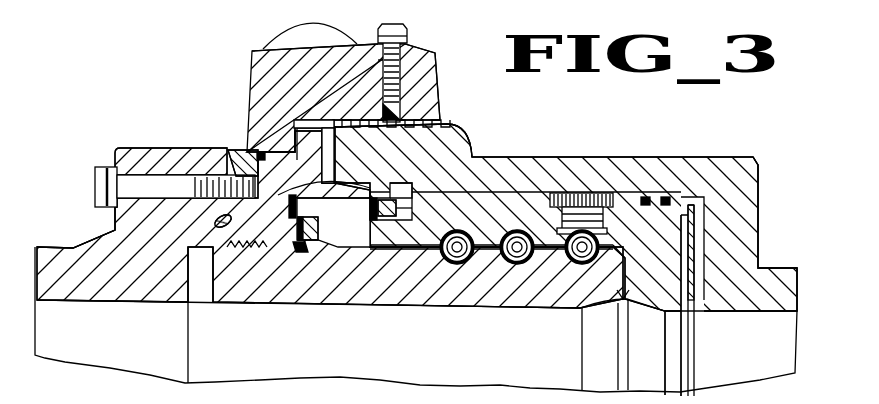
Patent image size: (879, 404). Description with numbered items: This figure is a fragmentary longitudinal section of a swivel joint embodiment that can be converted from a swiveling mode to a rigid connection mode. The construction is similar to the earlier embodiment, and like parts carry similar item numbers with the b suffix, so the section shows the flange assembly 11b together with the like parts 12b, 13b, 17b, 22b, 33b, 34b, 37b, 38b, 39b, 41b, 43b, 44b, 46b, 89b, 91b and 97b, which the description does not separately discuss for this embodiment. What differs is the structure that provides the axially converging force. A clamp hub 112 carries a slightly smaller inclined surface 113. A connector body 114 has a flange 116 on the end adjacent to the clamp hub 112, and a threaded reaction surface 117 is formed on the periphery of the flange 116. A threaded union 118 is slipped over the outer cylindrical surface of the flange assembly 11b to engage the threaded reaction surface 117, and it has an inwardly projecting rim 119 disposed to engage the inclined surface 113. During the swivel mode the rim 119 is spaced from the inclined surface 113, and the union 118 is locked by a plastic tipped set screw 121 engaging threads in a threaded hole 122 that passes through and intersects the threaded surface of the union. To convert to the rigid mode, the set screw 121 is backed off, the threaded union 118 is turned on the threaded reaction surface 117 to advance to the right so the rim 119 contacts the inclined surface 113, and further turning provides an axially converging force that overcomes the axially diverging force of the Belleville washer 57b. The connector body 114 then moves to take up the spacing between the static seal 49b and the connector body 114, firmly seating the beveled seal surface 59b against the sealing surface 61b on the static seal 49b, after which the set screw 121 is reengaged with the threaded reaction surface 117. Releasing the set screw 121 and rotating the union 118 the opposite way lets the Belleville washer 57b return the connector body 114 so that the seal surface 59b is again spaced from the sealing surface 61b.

The flange assembly 11b is at (100, 152).
The housing body 12b is at (768, 201).
The base member 13b is at (148, 340).
The bolt 17b is at (107, 183).
The main body 22b is at (408, 294).
The ball 33b is at (540, 258).
The sleeve wall 34b is at (668, 309).
The ball 37b is at (502, 236).
The ball housing 38b is at (610, 238).
The ball 39b is at (479, 260).
The threaded fitting 41b is at (585, 194).
The retainer block 43b is at (412, 210).
The track 44b is at (401, 249).
The notch 46b is at (402, 186).
The static seal 49b is at (338, 182).
The Belleville washer 57b is at (694, 259).
The beveled seal surface 59b is at (329, 223).
The sealing surface 61b is at (352, 192).
The notch 89b is at (626, 290).
The pins 91b is at (665, 196).
The nut 97b is at (139, 157).
The clamp hub 112 is at (238, 152).
The inclined surface 113 is at (290, 143).
The connector body 114 is at (657, 160).
The flange 116 is at (452, 140).
The threaded reaction surface 117 is at (398, 120).
The threaded union 118 is at (250, 65).
The inwardly projecting rim 119 is at (313, 122).
The plastic tipped set screw 121 is at (408, 40).
The threaded hole 122 is at (385, 64).